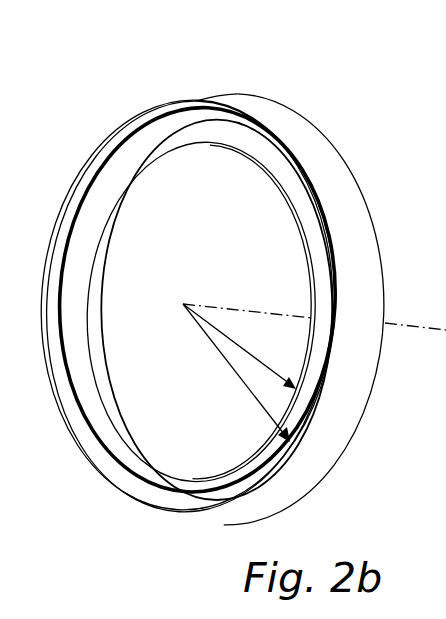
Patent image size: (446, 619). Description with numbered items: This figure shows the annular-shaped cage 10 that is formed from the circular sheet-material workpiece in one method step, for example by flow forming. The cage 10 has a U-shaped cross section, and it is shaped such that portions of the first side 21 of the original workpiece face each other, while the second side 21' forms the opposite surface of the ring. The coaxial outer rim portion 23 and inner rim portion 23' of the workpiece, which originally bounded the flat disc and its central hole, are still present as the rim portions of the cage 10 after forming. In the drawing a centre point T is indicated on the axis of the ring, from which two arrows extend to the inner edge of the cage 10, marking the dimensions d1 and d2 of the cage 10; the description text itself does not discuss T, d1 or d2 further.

The annular-shaped cage 10 is at (324, 78).
The outer rim portion 23 is at (238, 306).
The inner rim portion 23' is at (197, 283).
The first side 21 is at (206, 310).
The second side 21' is at (313, 309).
The center point T is at (181, 304).
The first diameter d1 is at (236, 373).
The second diameter d2 is at (239, 346).